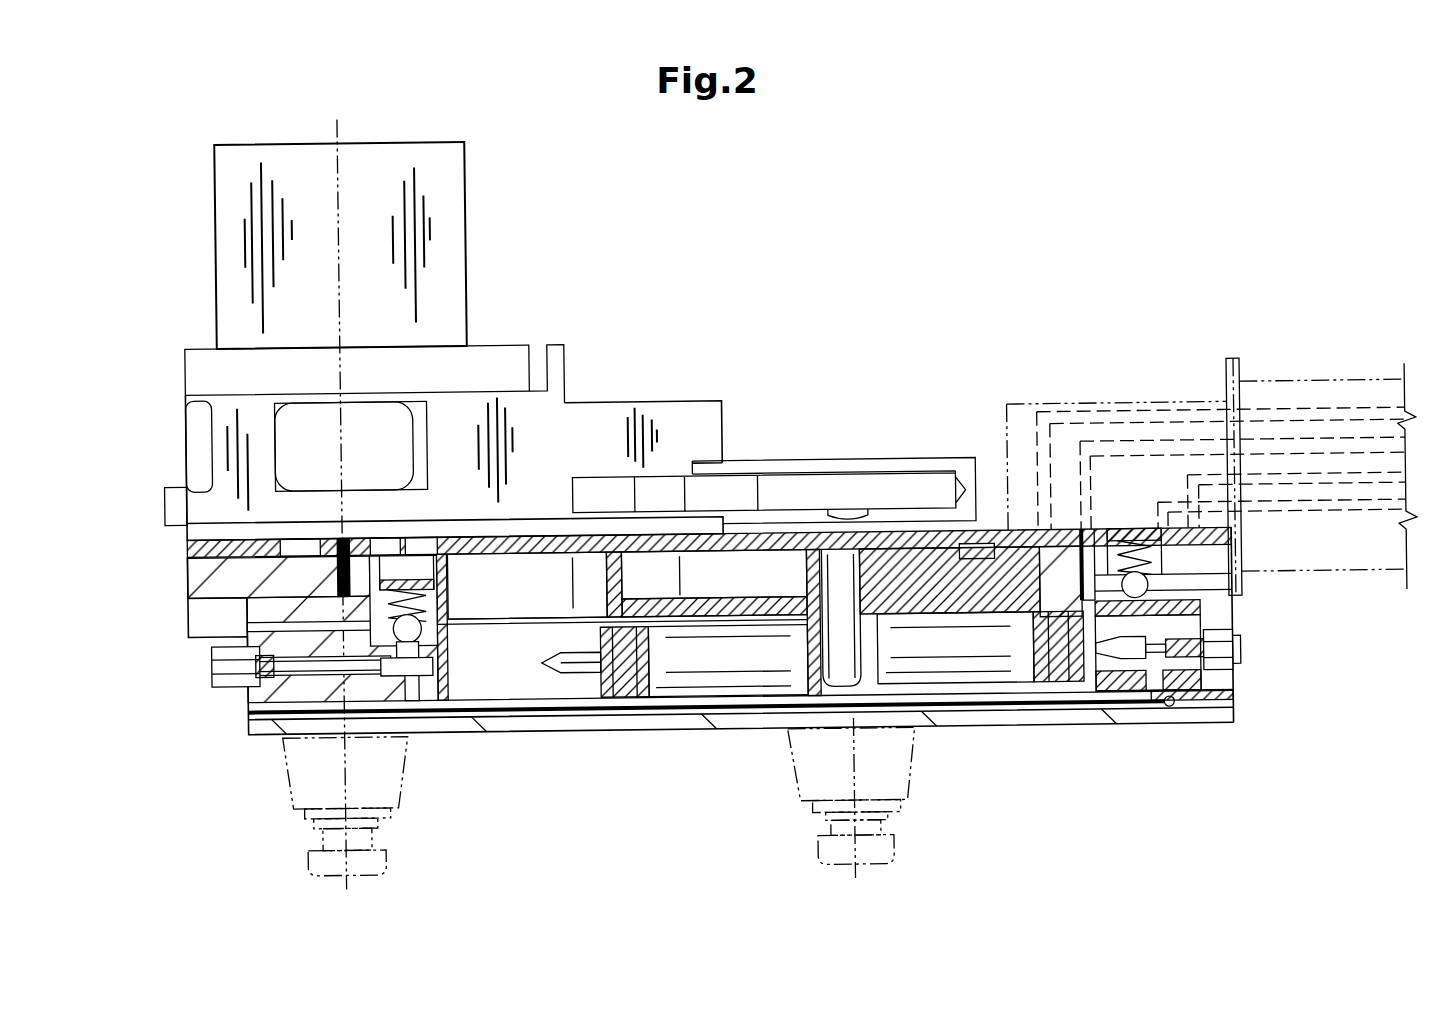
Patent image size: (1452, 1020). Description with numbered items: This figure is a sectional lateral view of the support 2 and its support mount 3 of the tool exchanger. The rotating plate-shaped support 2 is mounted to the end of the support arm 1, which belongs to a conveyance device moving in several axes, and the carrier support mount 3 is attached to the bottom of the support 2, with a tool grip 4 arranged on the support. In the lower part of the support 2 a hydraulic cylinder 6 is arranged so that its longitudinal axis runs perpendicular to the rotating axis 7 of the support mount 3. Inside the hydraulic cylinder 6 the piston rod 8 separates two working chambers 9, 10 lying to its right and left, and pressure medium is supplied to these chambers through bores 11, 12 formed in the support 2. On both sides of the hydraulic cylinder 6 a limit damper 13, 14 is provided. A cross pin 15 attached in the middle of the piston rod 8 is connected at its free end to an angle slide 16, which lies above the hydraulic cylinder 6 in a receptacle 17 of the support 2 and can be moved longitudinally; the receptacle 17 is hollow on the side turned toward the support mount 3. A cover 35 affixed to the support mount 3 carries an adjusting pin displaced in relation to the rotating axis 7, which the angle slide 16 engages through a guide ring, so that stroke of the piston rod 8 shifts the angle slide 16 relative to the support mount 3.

The support arm 1 is at (1342, 557).
The support 2 is at (1197, 700).
The support mount 3 is at (222, 185).
The tool grip 4 is at (820, 493).
The hydraulic cylinder 6 is at (545, 688).
The rotating axis 7 is at (336, 128).
The piston rod 8 is at (760, 667).
The working chamber 9 is at (1090, 700).
The working chamber 10 is at (457, 690).
The bore 11 is at (993, 710).
The bore 12 is at (1083, 530).
The limit damper 13 is at (378, 692).
The limit damper 14 is at (1247, 686).
The cross pin 15 is at (850, 650).
The angle slide 16 is at (694, 605).
The receptacle 17 is at (480, 587).
The cover 35 is at (198, 530).